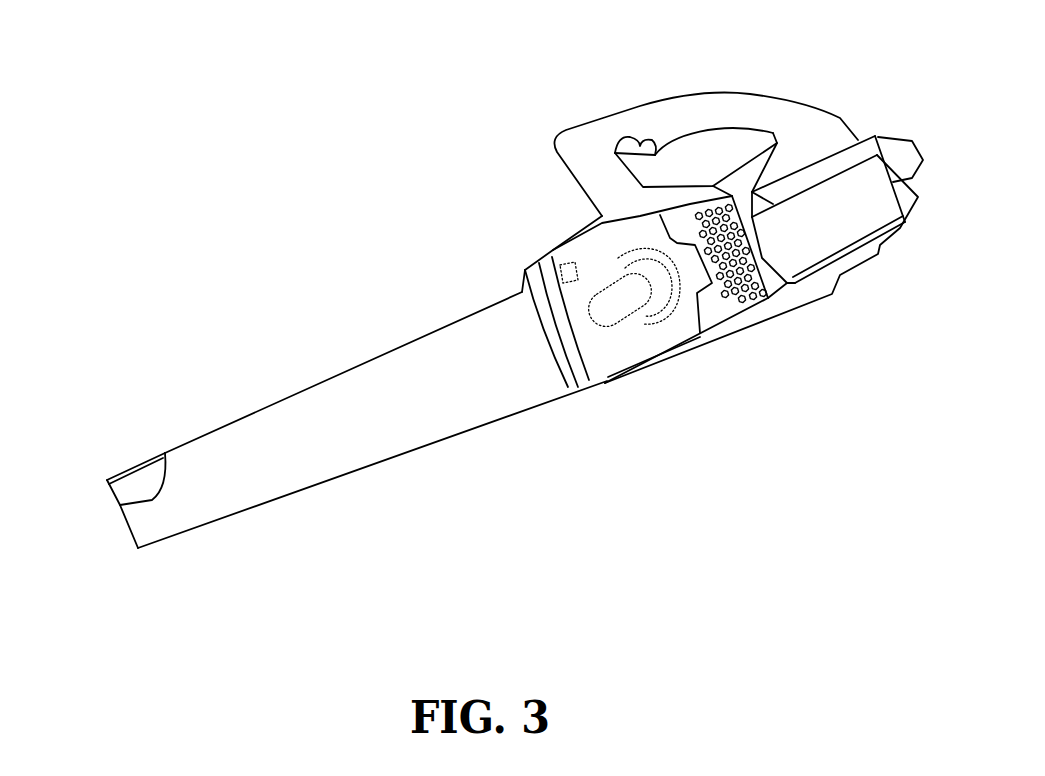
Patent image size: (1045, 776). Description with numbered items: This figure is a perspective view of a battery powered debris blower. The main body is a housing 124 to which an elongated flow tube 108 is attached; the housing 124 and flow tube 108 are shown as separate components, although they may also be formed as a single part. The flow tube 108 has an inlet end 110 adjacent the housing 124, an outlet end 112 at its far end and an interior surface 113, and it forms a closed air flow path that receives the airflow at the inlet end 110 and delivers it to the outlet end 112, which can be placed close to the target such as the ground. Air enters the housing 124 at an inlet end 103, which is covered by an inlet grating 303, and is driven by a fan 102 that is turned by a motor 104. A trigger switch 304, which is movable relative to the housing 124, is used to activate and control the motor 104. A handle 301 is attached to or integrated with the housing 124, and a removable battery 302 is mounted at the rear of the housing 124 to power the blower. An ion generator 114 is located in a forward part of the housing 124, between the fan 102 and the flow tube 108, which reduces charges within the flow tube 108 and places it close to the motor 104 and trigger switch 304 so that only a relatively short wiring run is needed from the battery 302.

The fan 102 is at (663, 312).
The inlet end 103 is at (730, 298).
The motor 104 is at (618, 310).
The flow tube 108 is at (350, 452).
The inlet end 110 is at (522, 318).
The outlet end 112 is at (163, 527).
The interior surface 113 is at (127, 473).
The ion generator 114 is at (553, 262).
The housing 124 is at (948, 321).
The handle 301 is at (580, 132).
The removable battery 302 is at (855, 180).
The inlet grating 303 is at (703, 205).
The trigger switch 304 is at (634, 143).